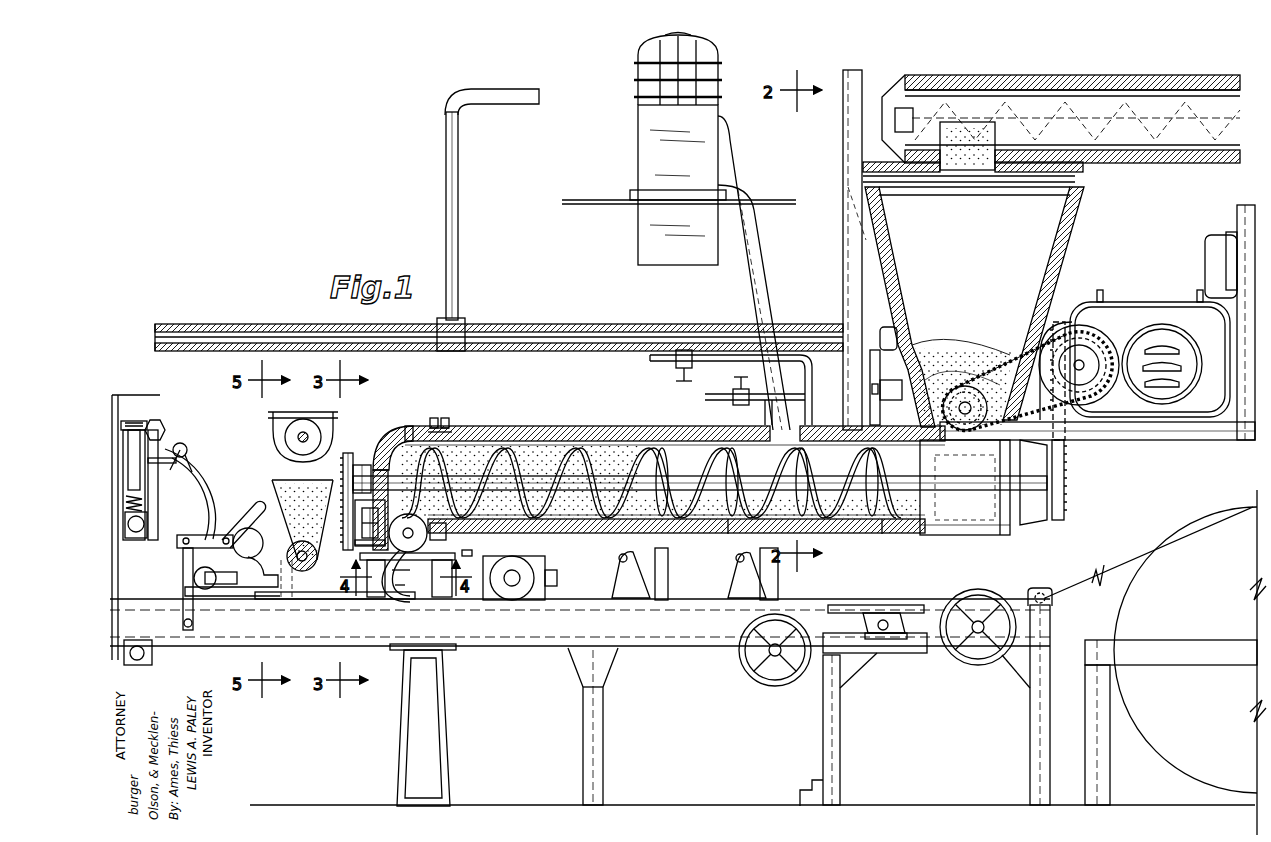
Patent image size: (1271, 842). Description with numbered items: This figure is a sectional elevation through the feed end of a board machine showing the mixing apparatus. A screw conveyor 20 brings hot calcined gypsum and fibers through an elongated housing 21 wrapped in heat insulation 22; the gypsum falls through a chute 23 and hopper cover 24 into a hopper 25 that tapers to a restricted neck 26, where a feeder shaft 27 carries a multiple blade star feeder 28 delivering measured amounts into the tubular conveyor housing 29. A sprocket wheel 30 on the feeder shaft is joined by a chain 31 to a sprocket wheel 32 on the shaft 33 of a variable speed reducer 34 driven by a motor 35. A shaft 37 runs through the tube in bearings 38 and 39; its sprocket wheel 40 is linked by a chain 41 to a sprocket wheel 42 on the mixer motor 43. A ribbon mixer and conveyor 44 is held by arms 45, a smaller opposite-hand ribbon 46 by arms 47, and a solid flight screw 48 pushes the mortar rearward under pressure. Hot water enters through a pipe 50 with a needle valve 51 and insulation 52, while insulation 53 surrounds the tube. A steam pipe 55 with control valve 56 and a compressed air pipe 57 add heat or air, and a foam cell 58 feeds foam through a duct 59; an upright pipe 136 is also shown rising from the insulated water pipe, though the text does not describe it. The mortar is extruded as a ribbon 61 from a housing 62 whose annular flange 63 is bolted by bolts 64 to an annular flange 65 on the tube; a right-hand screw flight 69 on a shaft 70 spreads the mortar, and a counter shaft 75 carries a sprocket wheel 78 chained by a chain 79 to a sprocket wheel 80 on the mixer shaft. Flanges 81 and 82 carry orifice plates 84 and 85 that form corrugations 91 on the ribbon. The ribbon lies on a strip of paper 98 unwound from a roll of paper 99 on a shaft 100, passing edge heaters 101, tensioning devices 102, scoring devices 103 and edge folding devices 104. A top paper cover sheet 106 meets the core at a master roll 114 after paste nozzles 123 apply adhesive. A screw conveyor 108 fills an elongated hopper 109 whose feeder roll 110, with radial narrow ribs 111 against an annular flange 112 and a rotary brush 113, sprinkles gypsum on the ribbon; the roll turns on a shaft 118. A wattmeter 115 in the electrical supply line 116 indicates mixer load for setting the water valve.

The screw conveyor 20 is at (1120, 110).
The elongated housing 21 is at (1163, 108).
The heat insulation 22 is at (1102, 77).
The chute 23 is at (973, 128).
The hopper cover 24 is at (1064, 192).
The hopper 25 is at (1030, 233).
The restricted neck 26 is at (1020, 347).
The feeder shaft 27 is at (997, 393).
The multiple blade star feeder 28 is at (1066, 466).
The tubular conveyor housing 29 is at (907, 535).
The sprocket wheel 30 is at (1003, 405).
The chain 31 is at (1018, 358).
The sprocket wheel 32 is at (1083, 358).
The shaft 33 is at (1082, 372).
The variable speed reducer 34 is at (1090, 368).
The motor 35 is at (1180, 390).
The shaft 37 is at (881, 535).
The bearing 38 is at (362, 465).
The bearing 39 is at (1040, 510).
The sprocket wheel 40 is at (1066, 497).
The chain 41 is at (1068, 455).
The sprocket wheel 42 is at (1066, 323).
The mixer motor 43 is at (1178, 312).
The ribbon mixer and conveyor 44 is at (727, 531).
The arms 45 is at (706, 455).
The ribbon 46 is at (670, 462).
The arms 47 is at (623, 520).
The solid flight screw 48 is at (563, 445).
The pipe 50 is at (876, 332).
The needle valve 51 is at (896, 386).
The insulation 52 is at (672, 323).
The insulation 53 is at (574, 426).
The steam pipe 55 is at (726, 362).
The control valve 56 is at (678, 368).
The compressed air pipe 57 is at (731, 400).
The foam cell 58 is at (648, 150).
The duct 59 is at (762, 290).
The ribbon 61 is at (400, 581).
The housing 62 is at (399, 430).
The annular flange 63 is at (438, 420).
The bolts 64 is at (450, 432).
The annular flange 65 is at (446, 419).
The right-hand screw flight 69 is at (396, 560).
The shaft 70 is at (446, 535).
The counter shaft 75 is at (363, 523).
The sprocket wheel 78 is at (355, 516).
The chain 79 is at (368, 514).
The sprocket wheel 80 is at (343, 463).
The flange 81 is at (468, 551).
The flange 82 is at (355, 540).
The orifice plates 84 is at (409, 565).
The orifice plates 85 is at (365, 552).
The longitudinal ridges or corrugations 91 is at (322, 600).
The strip of paper 98 is at (1122, 563).
The roll of paper 99 is at (1126, 616).
The shaft 100 is at (1252, 640).
The edge heaters 101 is at (916, 607).
The tensioning devices 102 is at (783, 592).
The scoring devices 103 is at (545, 576).
The edge folding devices 104 is at (275, 600).
The top paper cover sheet 106 is at (196, 473).
The screw conveyor 108 is at (286, 437).
The elongated hopper 109 is at (271, 490).
The feeder roll 110 is at (290, 550).
The radial narrow ribs 111 is at (296, 540).
The annular flange 112 is at (288, 566).
The rotary brush 113 is at (330, 652).
The master roll 114 is at (190, 500).
The wattmeter 115 is at (1216, 245).
The electrical supply line 116 is at (1207, 265).
The shaft 118 is at (455, 726).
The paste nozzles 123 is at (188, 462).
The pipe 136 is at (459, 252).